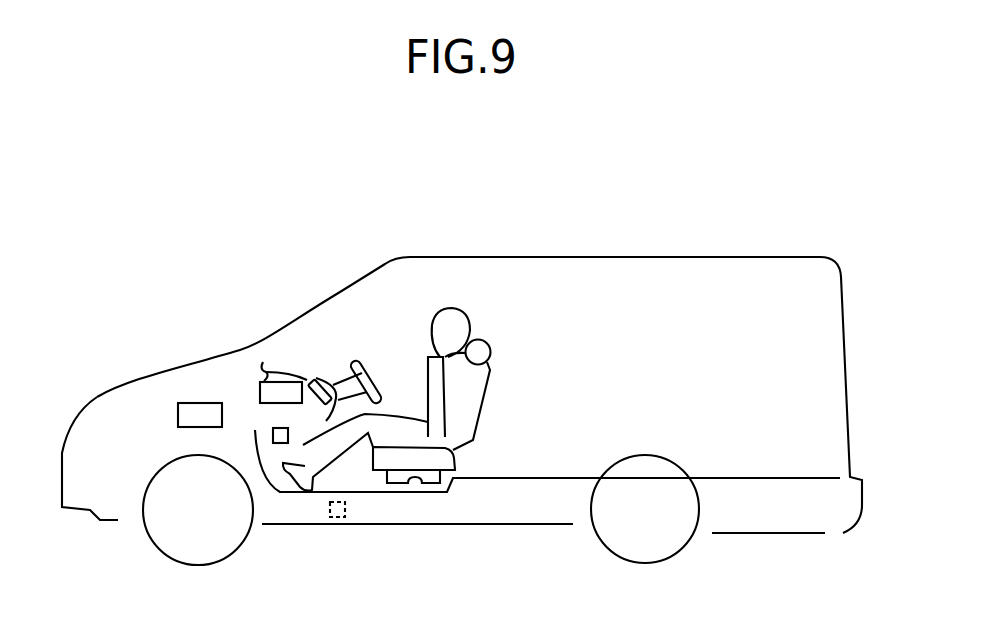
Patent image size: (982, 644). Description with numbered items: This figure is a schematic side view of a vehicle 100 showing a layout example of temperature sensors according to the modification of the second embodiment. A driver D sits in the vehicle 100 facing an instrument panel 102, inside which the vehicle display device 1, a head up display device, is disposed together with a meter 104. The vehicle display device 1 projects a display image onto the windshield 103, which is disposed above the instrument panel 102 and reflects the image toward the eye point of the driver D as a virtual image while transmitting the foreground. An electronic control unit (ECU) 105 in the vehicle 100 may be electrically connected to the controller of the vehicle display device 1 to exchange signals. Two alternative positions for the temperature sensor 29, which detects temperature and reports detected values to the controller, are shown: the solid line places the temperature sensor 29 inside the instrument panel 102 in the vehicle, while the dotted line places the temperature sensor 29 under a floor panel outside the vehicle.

The vehicle 100 is at (443, 199).
The driver D is at (417, 403).
The electronic control unit (ECU) 105 is at (187, 400).
The vehicle display device 1 is at (253, 378).
The instrument panel 102 is at (325, 372).
The meter 104 is at (313, 372).
The windshield 103 is at (302, 322).
The temperature sensor 29 is at (274, 447).